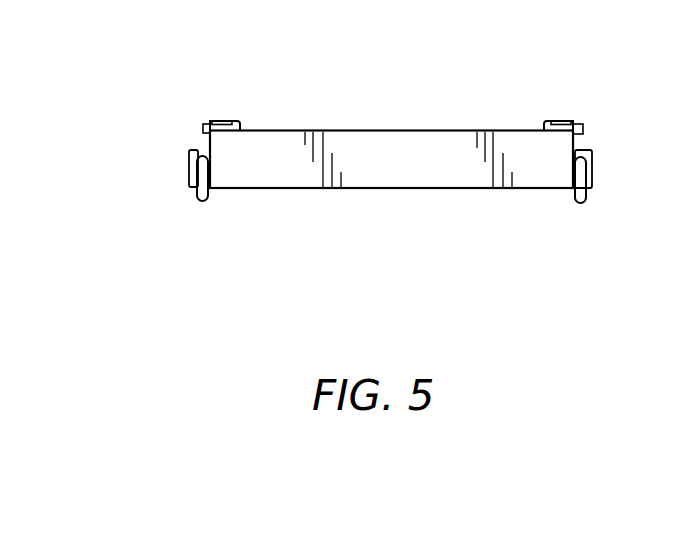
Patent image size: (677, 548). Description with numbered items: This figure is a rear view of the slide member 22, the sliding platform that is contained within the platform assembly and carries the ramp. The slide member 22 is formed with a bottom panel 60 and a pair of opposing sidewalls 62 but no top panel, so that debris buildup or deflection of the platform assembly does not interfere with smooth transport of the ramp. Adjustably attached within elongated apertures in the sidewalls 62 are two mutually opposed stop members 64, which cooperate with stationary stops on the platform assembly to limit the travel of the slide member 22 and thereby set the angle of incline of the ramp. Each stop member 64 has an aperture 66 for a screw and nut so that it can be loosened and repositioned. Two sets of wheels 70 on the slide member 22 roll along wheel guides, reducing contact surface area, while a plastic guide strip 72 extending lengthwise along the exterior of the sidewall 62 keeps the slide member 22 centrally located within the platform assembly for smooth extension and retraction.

The slide member 22 is at (432, 256).
The bottom panel 60 is at (260, 188).
The sidewalls 62 is at (240, 128).
The stop members 64 is at (206, 130).
The aperture 66 is at (206, 129).
The wheels 70 is at (203, 201).
The guide strip 72 is at (204, 153).